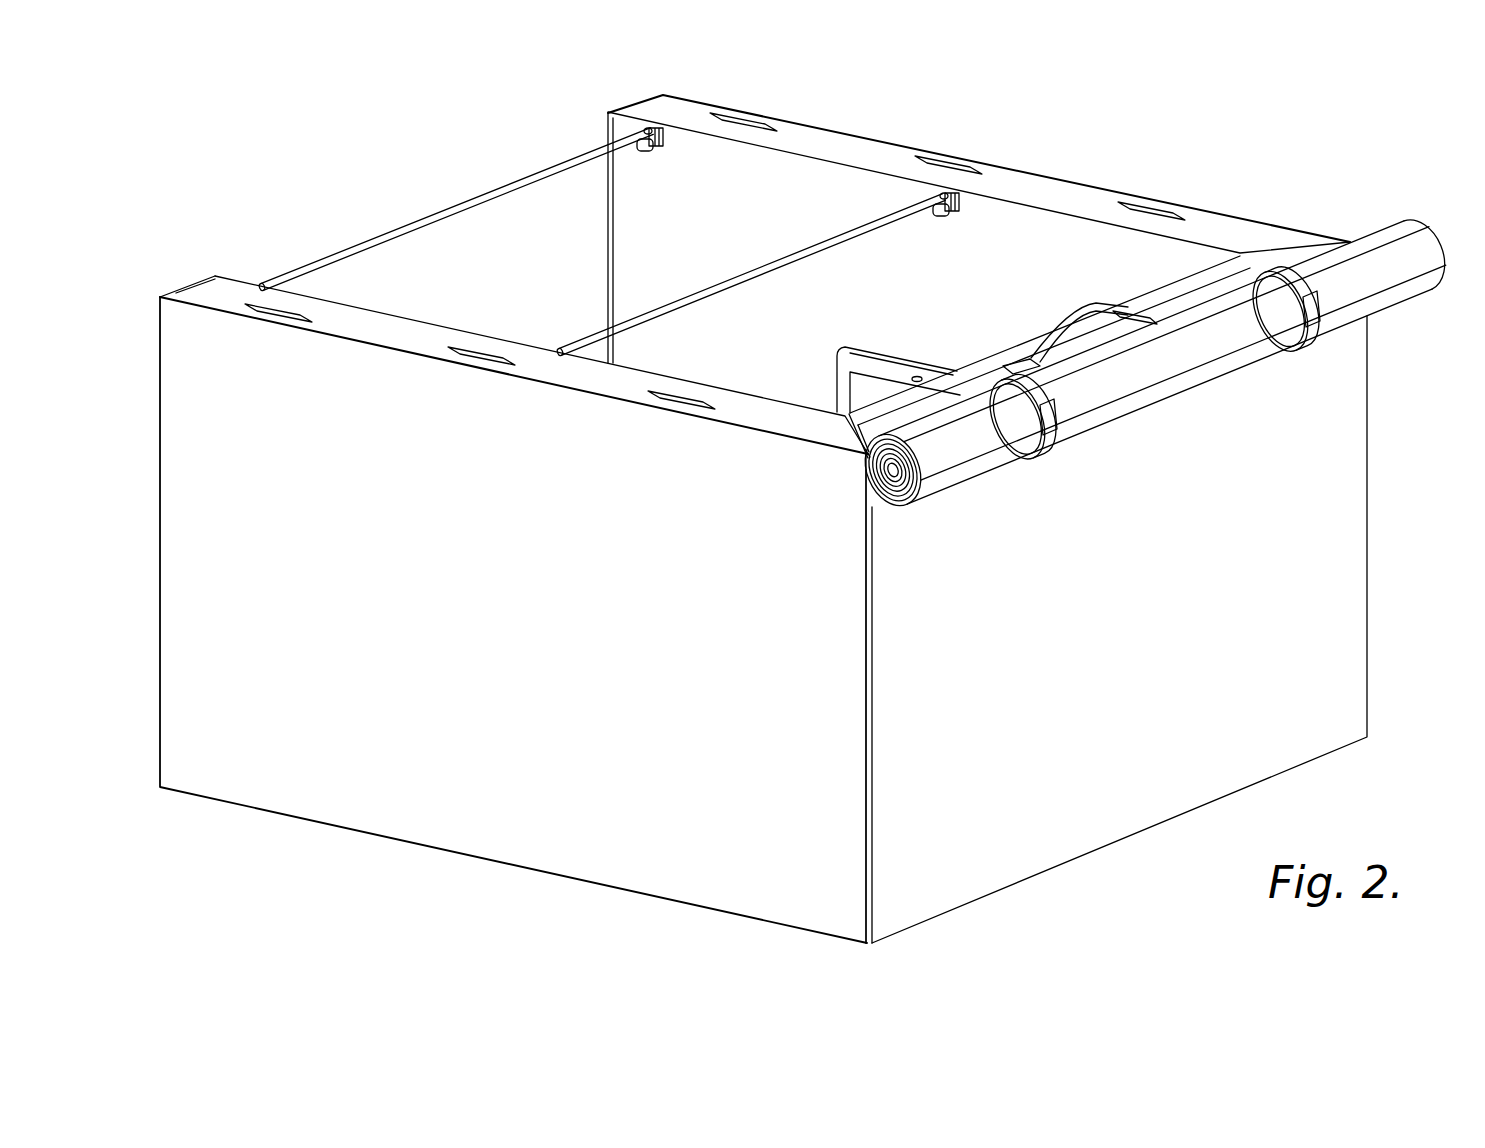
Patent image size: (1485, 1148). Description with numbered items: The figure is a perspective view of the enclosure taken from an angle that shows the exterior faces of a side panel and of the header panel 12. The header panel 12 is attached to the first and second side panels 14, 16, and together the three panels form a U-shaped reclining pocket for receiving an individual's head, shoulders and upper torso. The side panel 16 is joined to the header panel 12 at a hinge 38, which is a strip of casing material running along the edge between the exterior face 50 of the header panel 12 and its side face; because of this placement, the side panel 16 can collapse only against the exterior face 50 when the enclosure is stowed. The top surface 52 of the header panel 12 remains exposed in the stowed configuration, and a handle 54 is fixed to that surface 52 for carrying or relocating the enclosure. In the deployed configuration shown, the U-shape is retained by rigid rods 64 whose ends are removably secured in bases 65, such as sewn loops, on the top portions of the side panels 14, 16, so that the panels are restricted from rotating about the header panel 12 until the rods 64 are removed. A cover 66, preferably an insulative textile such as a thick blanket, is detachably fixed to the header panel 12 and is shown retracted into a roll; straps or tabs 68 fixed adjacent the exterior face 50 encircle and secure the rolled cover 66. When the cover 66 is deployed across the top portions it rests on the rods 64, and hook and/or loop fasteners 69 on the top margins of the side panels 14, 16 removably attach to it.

The header panel 12 is at (741, 612).
The first side panel 14 is at (870, 128).
The second side panel 16 is at (157, 407).
The hinge 38 is at (868, 864).
The exterior face 50 is at (988, 856).
The surface 52 is at (1228, 268).
The handle 54 is at (1060, 330).
The rigid rod 64 is at (567, 161).
The base 65 is at (647, 152).
The cover 66 is at (1413, 248).
The strap or tab 68 is at (1302, 272).
The hook and/or loop fastener 69 is at (735, 112).